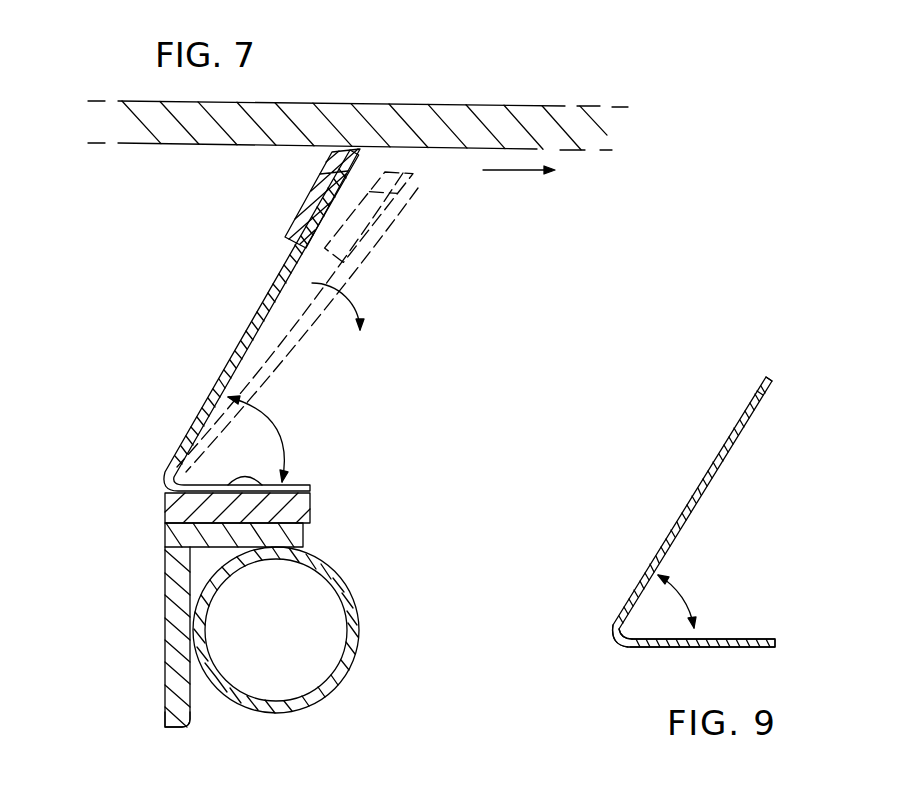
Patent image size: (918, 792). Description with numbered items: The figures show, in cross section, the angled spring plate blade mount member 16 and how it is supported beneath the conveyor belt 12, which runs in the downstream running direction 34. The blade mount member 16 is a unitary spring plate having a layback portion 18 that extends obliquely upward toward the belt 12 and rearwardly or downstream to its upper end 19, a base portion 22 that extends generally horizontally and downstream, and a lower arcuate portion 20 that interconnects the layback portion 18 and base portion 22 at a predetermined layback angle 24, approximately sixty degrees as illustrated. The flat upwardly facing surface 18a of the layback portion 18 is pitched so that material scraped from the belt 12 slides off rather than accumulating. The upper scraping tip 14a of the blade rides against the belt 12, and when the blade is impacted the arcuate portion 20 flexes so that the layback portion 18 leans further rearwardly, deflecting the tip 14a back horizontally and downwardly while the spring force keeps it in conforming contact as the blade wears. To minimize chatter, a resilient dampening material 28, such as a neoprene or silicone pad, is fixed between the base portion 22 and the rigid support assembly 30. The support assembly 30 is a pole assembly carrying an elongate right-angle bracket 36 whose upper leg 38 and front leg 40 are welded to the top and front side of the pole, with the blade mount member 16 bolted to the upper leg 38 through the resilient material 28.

In FIG. 7, the conveyor belt 12 is at (497, 115).
In FIG. 7, the upper scraping tip 14a is at (328, 164).
In FIG. 7, the blade mount member 16 is at (250, 320).
In FIG. 9, the blade mount member 16 is at (700, 534).
In FIG. 7, the flat upwardly facing surface 18a is at (278, 290).
In FIG. 7, the downstream running direction 34 is at (508, 172).
In FIG. 7, the resilient dampening material 28 is at (312, 508).
In FIG. 7, the upper leg 38 is at (300, 546).
In FIG. 7, the right-angle bracket 36 is at (163, 581).
In FIG. 7, the rigid support assembly 30 is at (222, 597).
In FIG. 7, the front leg 40 is at (163, 701).
In FIG. 9, the upper end 19 is at (740, 406).
In FIG. 9, the layback portion 18 is at (648, 500).
In FIG. 9, the layback angle 24 is at (698, 598).
In FIG. 9, the base portion 22 is at (748, 626).
In FIG. 9, the lower arcuate portion 20 is at (633, 658).